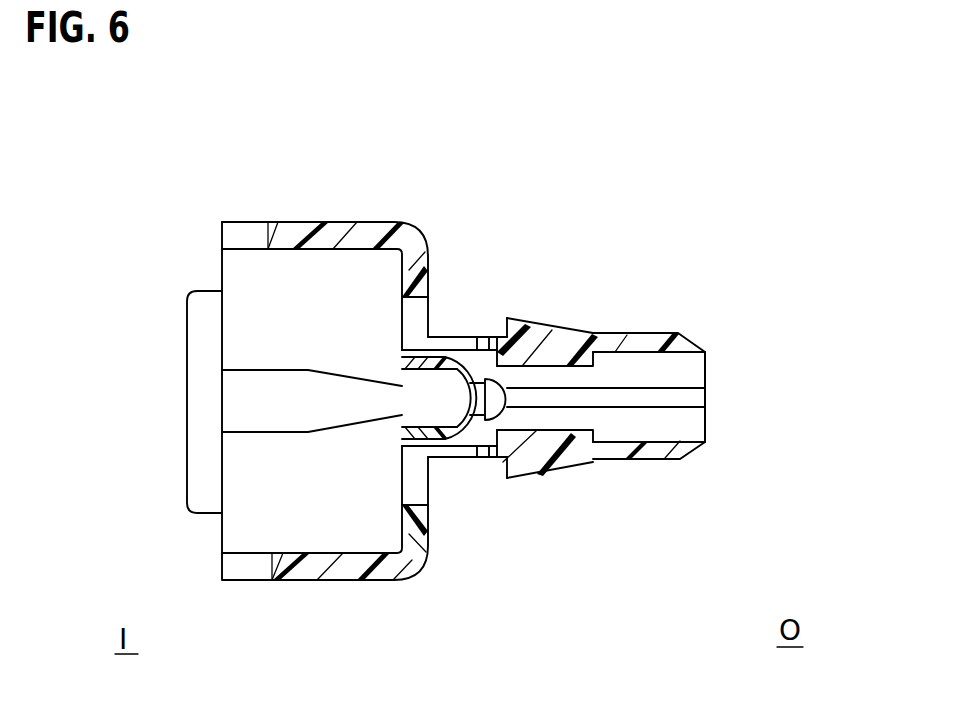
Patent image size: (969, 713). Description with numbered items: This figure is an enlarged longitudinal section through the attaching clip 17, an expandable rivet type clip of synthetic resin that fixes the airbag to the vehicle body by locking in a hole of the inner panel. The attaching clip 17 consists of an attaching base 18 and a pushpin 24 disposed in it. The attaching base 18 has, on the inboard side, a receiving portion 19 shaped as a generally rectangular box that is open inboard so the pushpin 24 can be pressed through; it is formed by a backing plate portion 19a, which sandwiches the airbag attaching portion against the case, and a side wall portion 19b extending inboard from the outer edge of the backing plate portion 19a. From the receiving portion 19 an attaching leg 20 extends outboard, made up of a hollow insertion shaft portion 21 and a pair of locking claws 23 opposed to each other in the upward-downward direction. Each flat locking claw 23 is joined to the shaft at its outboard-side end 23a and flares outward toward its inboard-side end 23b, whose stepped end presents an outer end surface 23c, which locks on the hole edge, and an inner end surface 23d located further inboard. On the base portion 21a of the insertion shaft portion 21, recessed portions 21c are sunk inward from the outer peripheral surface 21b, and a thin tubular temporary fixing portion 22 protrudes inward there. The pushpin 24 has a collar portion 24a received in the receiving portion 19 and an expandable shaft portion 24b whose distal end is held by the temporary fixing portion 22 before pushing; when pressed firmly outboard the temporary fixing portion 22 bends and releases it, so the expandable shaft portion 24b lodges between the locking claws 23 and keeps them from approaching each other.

The attaching clip 17 is at (683, 188).
The attaching base 18 is at (386, 198).
The receiving portion 19 is at (333, 582).
The backing plate portion 19a is at (413, 267).
The side wall portion 19b is at (328, 222).
The attaching leg 20 is at (693, 478).
The insertion shaft portion 21 is at (675, 333).
The base portion 21a is at (482, 458).
The outer peripheral surface 21b is at (615, 333).
The recessed portions 21c is at (464, 350).
The temporary fixing portion 22 is at (458, 350).
The locking claws 23 is at (558, 319).
The outboard-side ends 23a is at (580, 334).
The inboard-side ends 23b is at (517, 334).
The outer end surface 23c is at (507, 319).
The inner end surface 23d is at (487, 337).
The pushpin 24 is at (168, 483).
The collar portion 24a is at (193, 337).
The expandable shaft portion 24b is at (460, 397).